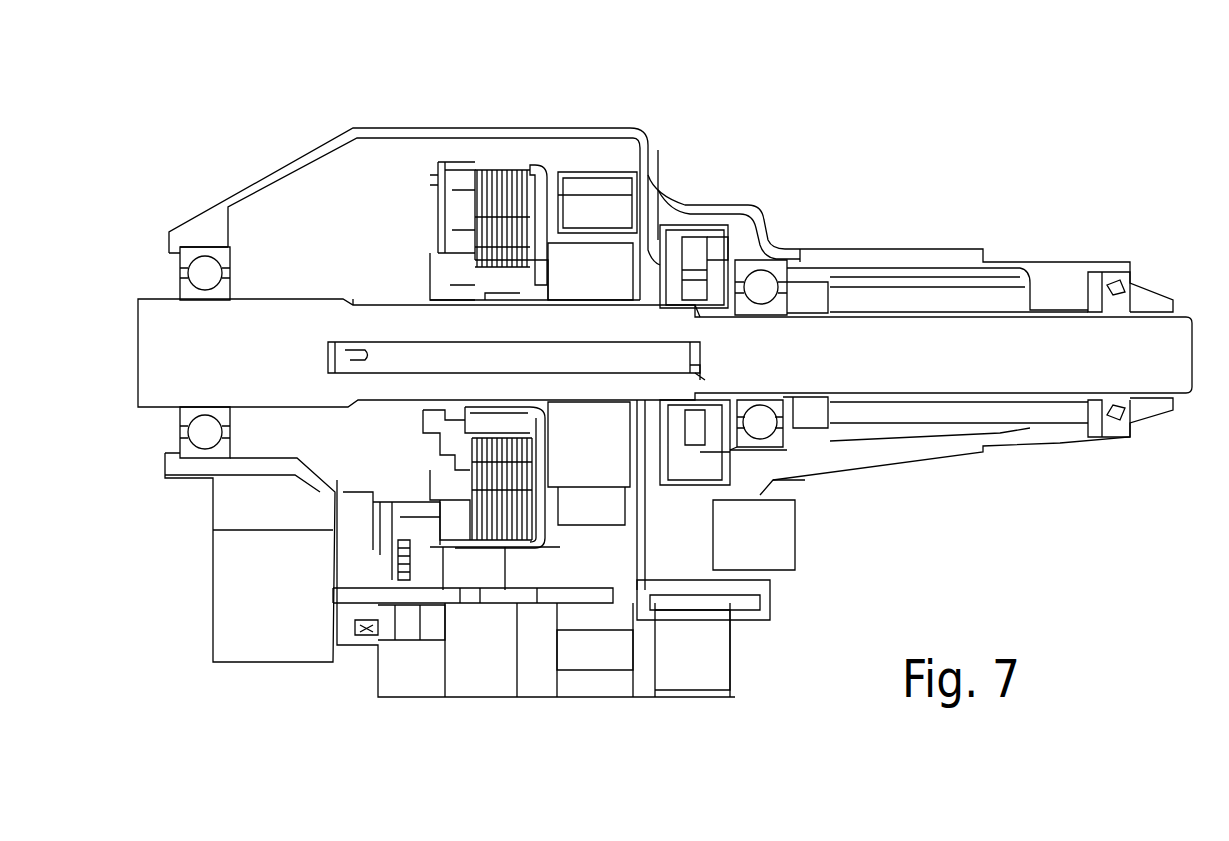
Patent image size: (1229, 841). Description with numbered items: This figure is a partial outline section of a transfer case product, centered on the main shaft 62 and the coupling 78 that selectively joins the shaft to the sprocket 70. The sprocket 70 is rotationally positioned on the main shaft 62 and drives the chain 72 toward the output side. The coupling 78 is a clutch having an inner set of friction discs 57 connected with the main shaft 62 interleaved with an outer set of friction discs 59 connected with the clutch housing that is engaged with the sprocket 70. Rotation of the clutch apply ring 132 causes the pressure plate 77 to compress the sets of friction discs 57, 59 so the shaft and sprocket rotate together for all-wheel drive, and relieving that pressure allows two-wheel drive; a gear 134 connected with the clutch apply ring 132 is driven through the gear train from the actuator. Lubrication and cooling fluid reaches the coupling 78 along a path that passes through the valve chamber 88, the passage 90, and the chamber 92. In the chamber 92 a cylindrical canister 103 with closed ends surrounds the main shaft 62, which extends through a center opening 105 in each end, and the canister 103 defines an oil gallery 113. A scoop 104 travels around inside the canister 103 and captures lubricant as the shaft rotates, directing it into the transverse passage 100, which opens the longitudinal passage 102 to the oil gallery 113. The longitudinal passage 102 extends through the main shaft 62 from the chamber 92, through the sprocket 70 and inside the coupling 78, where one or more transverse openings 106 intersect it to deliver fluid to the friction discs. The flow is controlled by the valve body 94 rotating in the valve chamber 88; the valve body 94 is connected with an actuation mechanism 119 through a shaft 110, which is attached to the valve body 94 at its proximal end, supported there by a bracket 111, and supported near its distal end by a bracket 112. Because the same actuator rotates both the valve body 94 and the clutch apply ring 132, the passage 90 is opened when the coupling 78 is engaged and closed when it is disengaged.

The inner set of friction discs 57 is at (462, 197).
The outer set of friction discs 59 is at (525, 187).
The main shaft 62 is at (1158, 338).
The sprocket 70 is at (662, 175).
The chain 72 is at (582, 180).
The pressure plate 77 is at (508, 188).
The coupling 78 is at (512, 178).
The valve chamber 88 is at (697, 612).
The passage 90 is at (700, 605).
The chamber 92 is at (690, 540).
The valve body 94 is at (640, 635).
The transverse passage 100 is at (700, 378).
The longitudinal passage 102 is at (350, 350).
The canister 103 is at (712, 260).
The scoop 104 is at (688, 450).
The center opening 105 is at (688, 224).
The transverse passage (openings) 106 is at (493, 352).
The shaft 110 is at (525, 600).
The bracket 111 is at (628, 640).
The bracket 112 is at (435, 640).
The oil gallery 113 is at (697, 248).
The actuation mechanism 119 is at (365, 635).
The clutch apply ring 132 is at (270, 462).
The gear 134 is at (487, 230).